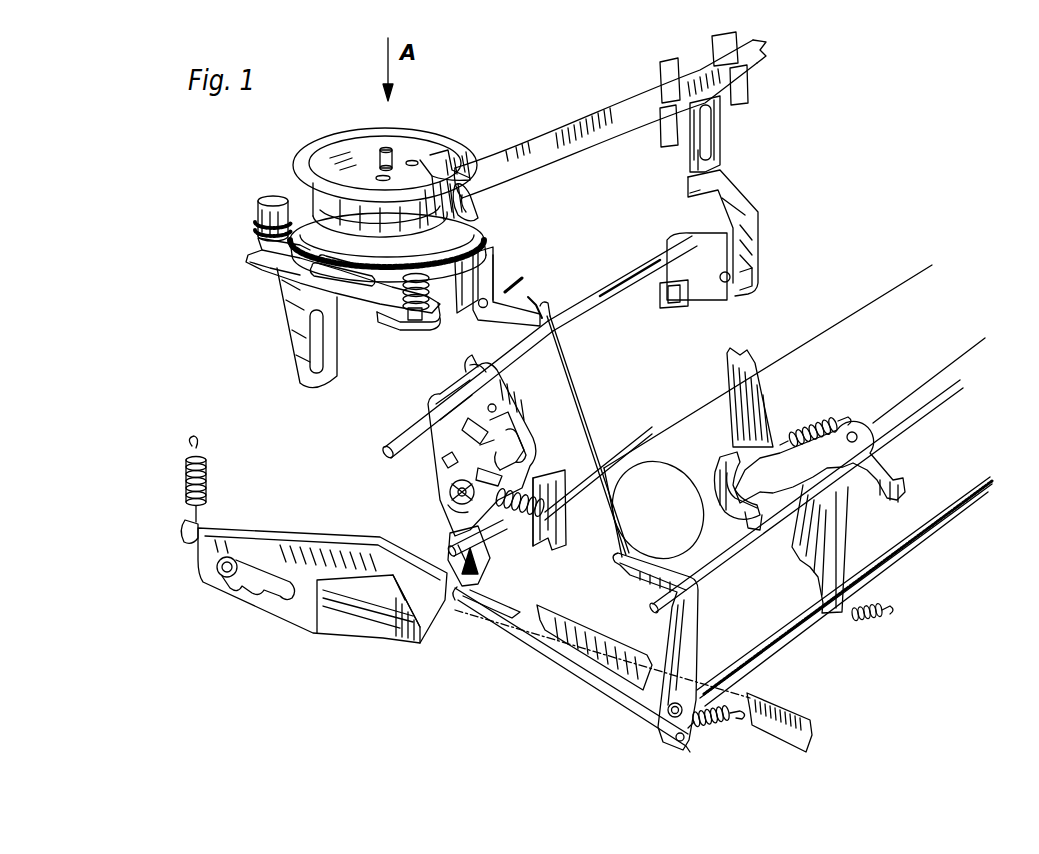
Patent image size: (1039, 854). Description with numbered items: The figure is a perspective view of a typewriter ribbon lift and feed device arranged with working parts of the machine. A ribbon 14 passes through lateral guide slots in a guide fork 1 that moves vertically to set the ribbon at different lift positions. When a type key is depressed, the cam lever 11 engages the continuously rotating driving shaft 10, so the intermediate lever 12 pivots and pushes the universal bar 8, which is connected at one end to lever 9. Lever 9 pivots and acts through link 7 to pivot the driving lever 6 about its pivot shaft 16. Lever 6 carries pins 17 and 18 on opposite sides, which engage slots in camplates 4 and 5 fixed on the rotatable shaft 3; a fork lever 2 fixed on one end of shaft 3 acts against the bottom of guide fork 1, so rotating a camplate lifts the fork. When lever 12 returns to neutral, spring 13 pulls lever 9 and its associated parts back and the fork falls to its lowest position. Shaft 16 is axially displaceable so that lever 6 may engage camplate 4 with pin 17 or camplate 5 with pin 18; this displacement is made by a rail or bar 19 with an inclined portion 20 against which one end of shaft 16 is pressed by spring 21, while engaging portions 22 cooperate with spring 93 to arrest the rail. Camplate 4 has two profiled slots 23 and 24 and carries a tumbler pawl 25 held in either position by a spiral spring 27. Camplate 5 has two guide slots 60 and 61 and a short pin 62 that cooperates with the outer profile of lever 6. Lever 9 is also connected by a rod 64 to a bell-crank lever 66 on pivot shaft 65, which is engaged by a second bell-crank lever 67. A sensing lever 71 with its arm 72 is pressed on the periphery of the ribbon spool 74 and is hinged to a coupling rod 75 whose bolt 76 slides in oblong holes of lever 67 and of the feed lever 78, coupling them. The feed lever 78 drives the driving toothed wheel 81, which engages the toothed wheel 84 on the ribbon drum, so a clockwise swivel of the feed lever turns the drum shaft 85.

The guide fork 1 is at (736, 200).
The fork lever 2 is at (700, 270).
The rotatable shaft 3 is at (614, 288).
The camplate 4 is at (440, 440).
The camplate 5 is at (506, 426).
The driving lever 6 is at (548, 538).
The link 7 is at (586, 674).
The universal bar 8 is at (772, 630).
The lever 9 is at (682, 622).
The driving shaft 10 is at (810, 368).
The cam lever 11 is at (760, 480).
The intermediate lever 12 is at (815, 536).
The spring 13 is at (714, 728).
The ribbon 14 is at (566, 142).
The pivot shaft 16 is at (494, 548).
The pin 17 is at (446, 460).
The pin 18 is at (476, 420).
The rail or bar 19 is at (332, 548).
The inclined portion 20 is at (400, 628).
The spring 21 is at (542, 522).
The engaging portions 22 is at (290, 600).
The profiled slot 23 is at (542, 506).
The profiled slot 24 is at (450, 494).
The tumbler pawl 25 is at (504, 474).
The spiral spring 27 is at (470, 506).
The guide slot 60 is at (514, 460).
The guide slot 61 is at (512, 446).
The short pin 62 is at (488, 378).
The rod 64 is at (572, 388).
The pivot shaft 65 is at (510, 288).
The bell-crank lever 66 is at (522, 306).
The second bell-crank lever 67 is at (312, 298).
The sensing lever 71 is at (416, 308).
The arm 72 is at (470, 207).
The ribbon spool 74 is at (347, 142).
The coupling rod 75 is at (392, 288).
The bolt 76 is at (262, 262).
The feed lever 78 is at (306, 274).
The driving toothed wheel 81 is at (258, 220).
The toothed wheel 84 is at (468, 240).
The shaft 85 is at (396, 150).
The spring 93 is at (206, 486).